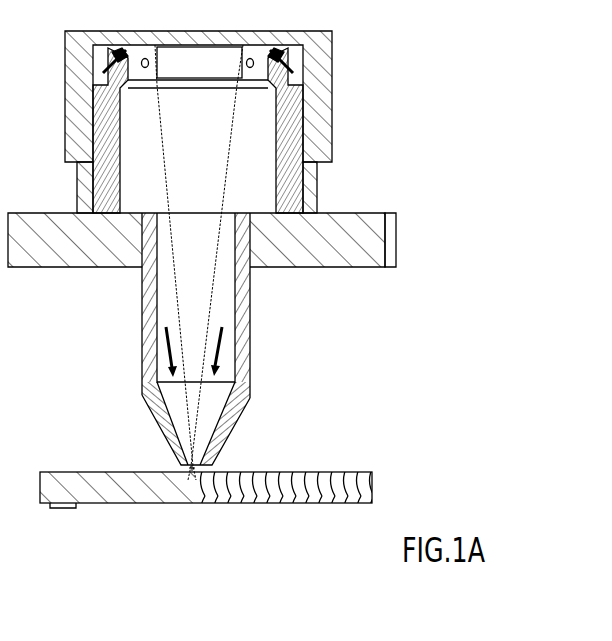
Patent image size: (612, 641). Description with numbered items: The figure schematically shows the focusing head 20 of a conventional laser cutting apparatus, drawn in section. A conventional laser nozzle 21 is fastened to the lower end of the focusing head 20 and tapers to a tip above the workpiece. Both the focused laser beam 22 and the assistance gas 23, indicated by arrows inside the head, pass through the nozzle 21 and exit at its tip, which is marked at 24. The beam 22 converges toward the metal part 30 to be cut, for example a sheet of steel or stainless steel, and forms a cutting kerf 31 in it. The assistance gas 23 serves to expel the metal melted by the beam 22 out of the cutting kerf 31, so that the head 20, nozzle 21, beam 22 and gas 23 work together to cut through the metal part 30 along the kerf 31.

The focusing head 20 is at (250, 325).
The laser nozzle 21 is at (224, 423).
The laser beam 22 is at (208, 183).
The assistance gas 23 is at (165, 350).
The focal point / nozzle orifice 24 is at (186, 470).
The metal part 30 is at (88, 485).
The cutting kerf 31 is at (228, 490).